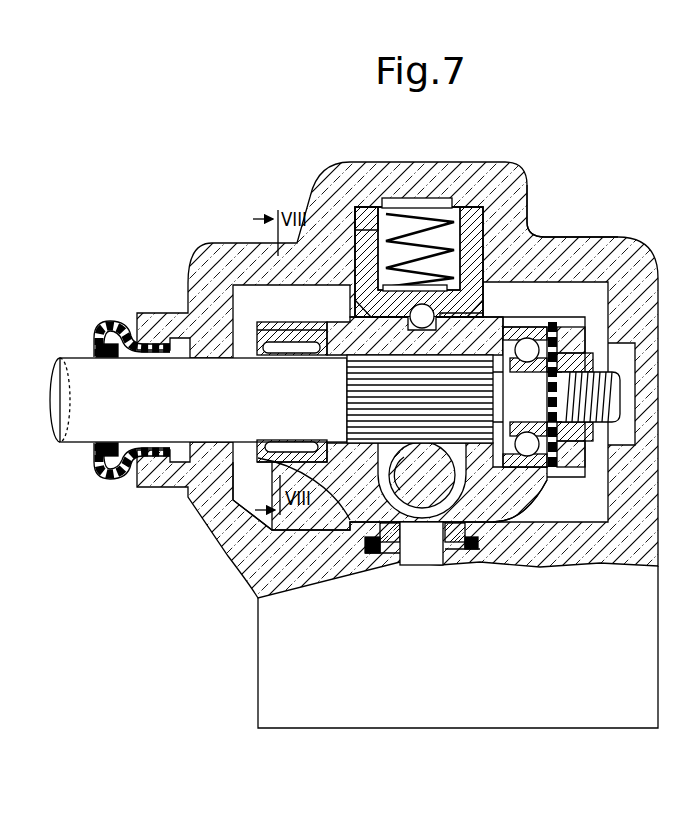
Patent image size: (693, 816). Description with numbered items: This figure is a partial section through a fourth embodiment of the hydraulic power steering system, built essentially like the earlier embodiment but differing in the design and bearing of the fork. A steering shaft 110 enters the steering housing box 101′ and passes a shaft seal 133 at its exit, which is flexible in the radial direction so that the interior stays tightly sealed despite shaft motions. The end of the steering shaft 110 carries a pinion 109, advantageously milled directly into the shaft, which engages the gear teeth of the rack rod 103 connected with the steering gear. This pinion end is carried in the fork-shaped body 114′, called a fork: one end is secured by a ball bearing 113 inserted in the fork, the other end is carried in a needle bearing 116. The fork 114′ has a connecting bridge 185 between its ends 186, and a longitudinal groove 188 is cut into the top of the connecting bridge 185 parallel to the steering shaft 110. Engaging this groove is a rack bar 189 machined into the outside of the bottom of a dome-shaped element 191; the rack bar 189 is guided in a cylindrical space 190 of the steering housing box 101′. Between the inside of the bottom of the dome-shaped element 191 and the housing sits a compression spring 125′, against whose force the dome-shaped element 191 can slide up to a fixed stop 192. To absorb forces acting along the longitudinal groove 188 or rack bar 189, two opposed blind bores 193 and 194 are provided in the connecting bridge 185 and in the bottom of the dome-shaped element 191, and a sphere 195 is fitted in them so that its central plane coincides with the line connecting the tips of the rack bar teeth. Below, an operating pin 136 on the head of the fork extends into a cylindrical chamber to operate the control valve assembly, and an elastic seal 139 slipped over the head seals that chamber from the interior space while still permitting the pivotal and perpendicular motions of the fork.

The steering housing box 101′ is at (334, 182).
The compression spring 125′ is at (402, 217).
The fixed stop 192 is at (471, 210).
The dome-shaped element 191 is at (478, 235).
The cylindrical space 190 is at (353, 210).
The shaft seal 133 is at (106, 322).
The ends of the fork 186 is at (298, 330).
The longitudinal groove 188 is at (373, 314).
The blind bore 193 is at (421, 244).
The rack bar 189 is at (484, 297).
The connecting bridge 185 is at (468, 335).
The sphere 195 is at (412, 324).
The blind bore 194 is at (418, 322).
The pinion 109 is at (366, 394).
The steering shaft 110 is at (145, 410).
The needle bearing 116 is at (280, 451).
The rack rod 103 is at (352, 509).
The fork 114′ is at (492, 494).
The ball bearing 113 is at (530, 452).
The elastic seal 139 is at (375, 553).
The operating pin 136 is at (431, 550).